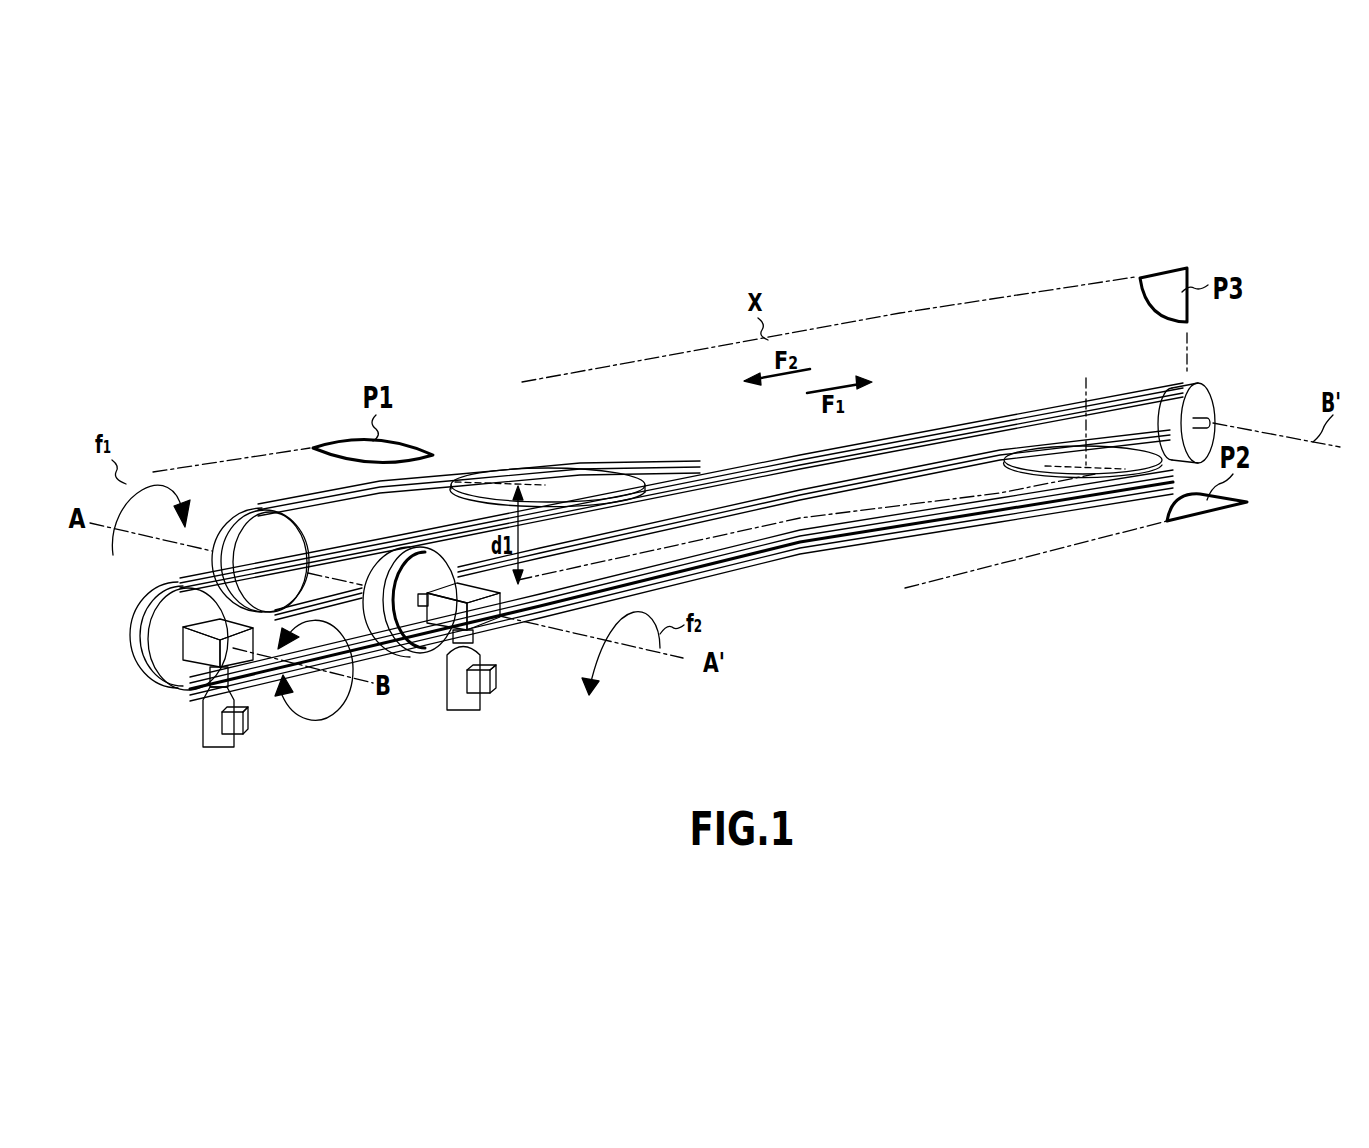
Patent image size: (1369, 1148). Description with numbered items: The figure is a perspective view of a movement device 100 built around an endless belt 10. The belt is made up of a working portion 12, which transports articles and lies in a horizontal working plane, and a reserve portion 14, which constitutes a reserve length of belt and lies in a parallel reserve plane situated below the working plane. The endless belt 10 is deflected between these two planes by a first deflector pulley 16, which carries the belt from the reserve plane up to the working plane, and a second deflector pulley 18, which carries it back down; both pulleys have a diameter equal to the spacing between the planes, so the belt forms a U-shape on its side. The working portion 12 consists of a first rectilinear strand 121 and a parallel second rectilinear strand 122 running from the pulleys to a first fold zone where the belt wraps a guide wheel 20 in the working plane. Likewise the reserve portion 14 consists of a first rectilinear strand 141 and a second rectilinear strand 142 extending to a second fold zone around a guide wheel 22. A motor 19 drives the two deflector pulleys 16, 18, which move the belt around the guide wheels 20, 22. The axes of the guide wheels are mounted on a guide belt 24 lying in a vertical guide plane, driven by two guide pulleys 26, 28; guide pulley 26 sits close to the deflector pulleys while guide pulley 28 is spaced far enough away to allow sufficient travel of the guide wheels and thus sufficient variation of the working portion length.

The movement device 100 is at (1073, 230).
The endless belt 10 is at (681, 478).
The working portion 12 is at (681, 478).
The first rectilinear strand 121 is at (357, 493).
The second rectilinear strand 122 is at (681, 478).
The reserve portion 14 is at (681, 563).
The first rectilinear strand 141 is at (738, 508).
The second rectilinear strand 142 is at (840, 553).
The first deflector pulley 16 is at (260, 537).
The second deflector pulley 18 is at (420, 572).
The motor 19 is at (473, 703).
The guide wheel 20 is at (590, 480).
The guide wheel 22 is at (1043, 463).
The guide belt 24 is at (981, 426).
The guide pulley 26 is at (183, 677).
The guide pulley 28 is at (1203, 400).